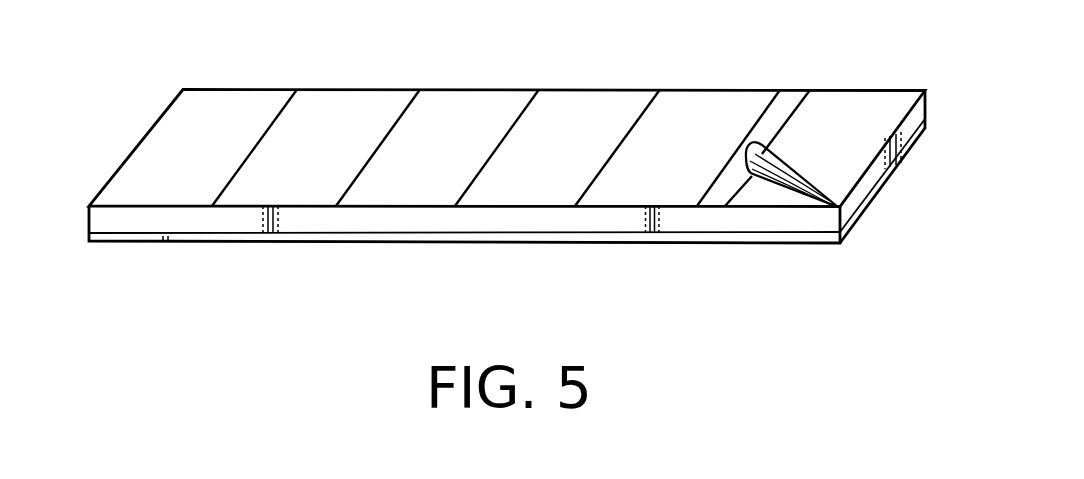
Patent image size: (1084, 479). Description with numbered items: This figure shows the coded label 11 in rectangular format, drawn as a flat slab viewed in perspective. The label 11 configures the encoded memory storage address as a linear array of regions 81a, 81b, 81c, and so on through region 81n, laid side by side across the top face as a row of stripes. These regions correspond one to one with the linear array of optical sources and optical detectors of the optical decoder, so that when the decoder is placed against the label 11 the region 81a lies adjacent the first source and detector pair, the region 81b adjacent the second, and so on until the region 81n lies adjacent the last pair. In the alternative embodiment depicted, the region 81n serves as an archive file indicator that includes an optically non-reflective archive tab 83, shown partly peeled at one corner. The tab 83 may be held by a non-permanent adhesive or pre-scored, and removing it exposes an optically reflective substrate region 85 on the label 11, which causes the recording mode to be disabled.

The label 11 is at (468, 313).
The region 81a is at (145, 145).
The region 81b is at (347, 110).
The region 81c is at (473, 110).
The region 81n is at (867, 112).
The archive tab 83 is at (767, 180).
The optically reflective substrate region 85 is at (777, 198).